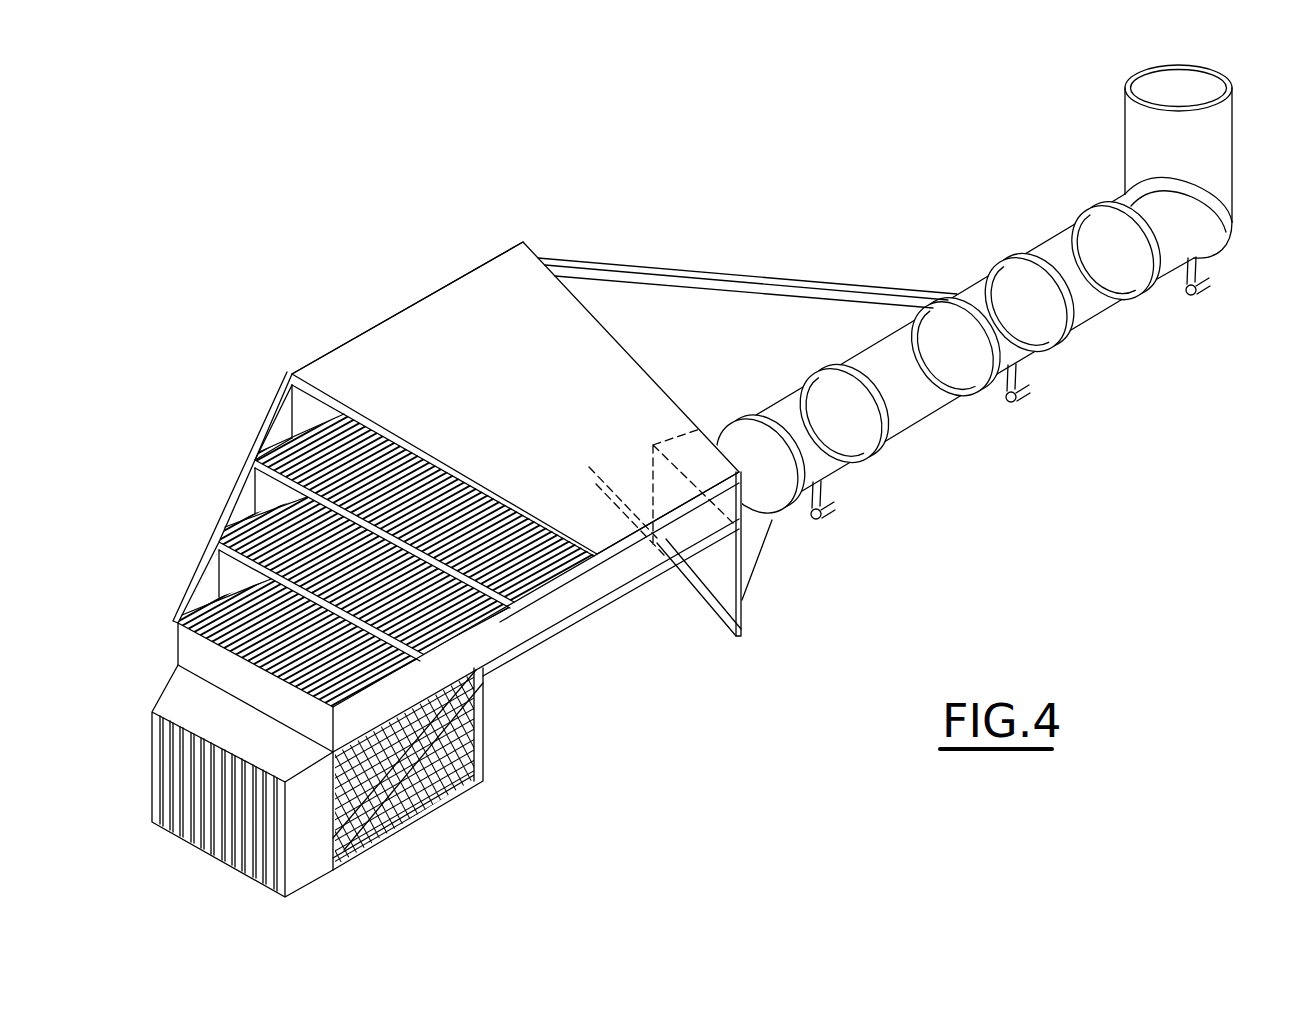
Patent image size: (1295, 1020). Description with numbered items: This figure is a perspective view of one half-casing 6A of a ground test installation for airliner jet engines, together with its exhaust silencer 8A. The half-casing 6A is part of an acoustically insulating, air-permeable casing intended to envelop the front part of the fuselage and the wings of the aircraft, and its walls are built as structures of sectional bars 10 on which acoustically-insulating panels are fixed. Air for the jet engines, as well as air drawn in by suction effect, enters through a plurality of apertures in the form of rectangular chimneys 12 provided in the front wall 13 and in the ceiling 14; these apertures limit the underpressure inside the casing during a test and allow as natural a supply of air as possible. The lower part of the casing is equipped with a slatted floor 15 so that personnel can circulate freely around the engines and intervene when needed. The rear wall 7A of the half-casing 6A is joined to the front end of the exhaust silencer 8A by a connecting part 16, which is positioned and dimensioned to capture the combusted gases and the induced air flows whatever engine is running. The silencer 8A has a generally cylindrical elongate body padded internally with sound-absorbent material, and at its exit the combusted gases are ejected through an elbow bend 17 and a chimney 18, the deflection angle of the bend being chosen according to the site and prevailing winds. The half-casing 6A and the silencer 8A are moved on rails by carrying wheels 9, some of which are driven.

The half-casing 6A is at (345, 340).
The rear wall 7A is at (655, 388).
The exhaust silencer 8A is at (905, 395).
The carrying wheels 9 is at (822, 526).
The sectional bars 10 is at (672, 268).
The rectangular chimneys 12 is at (497, 546).
The front wall 13 is at (303, 833).
The ceiling 14 is at (513, 432).
The slatted floor 15 is at (430, 783).
The connecting part 16 is at (768, 542).
The elbow bend 17 is at (1215, 212).
The chimney 18 is at (1130, 115).